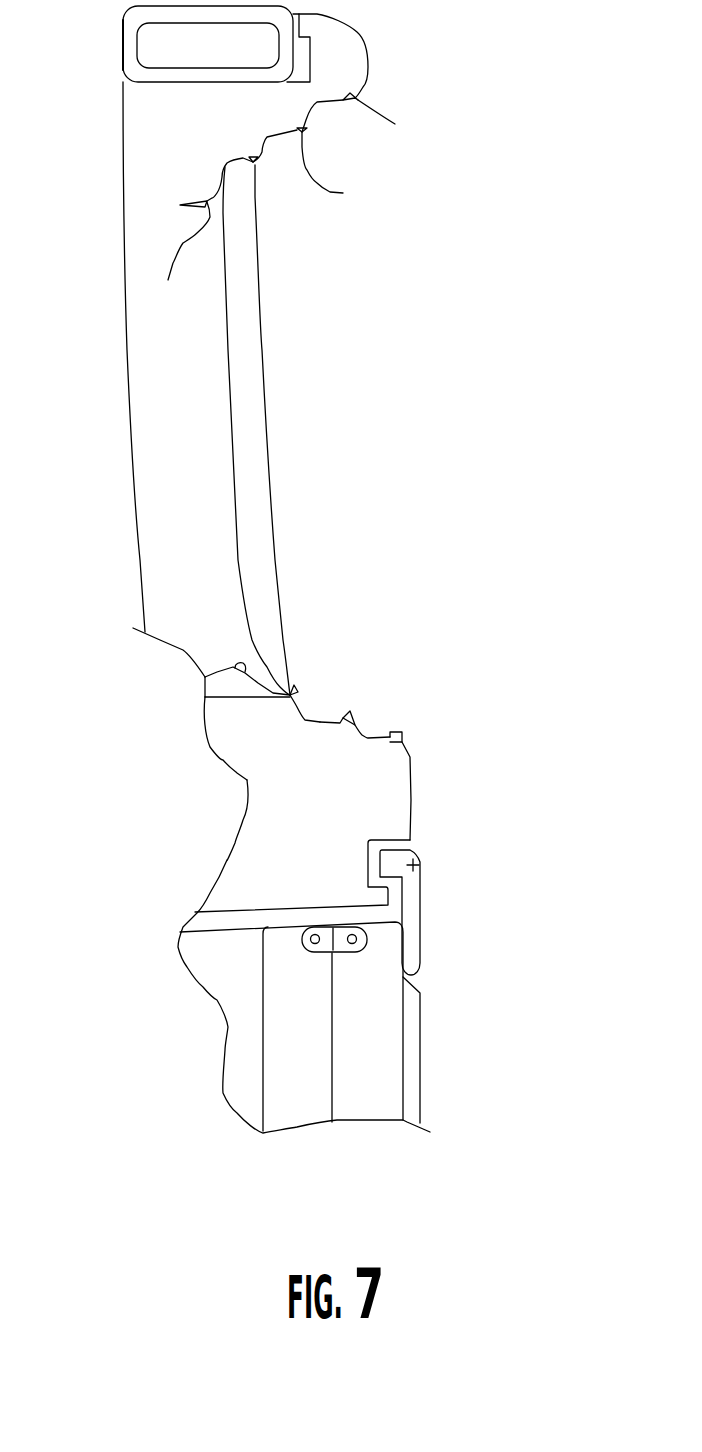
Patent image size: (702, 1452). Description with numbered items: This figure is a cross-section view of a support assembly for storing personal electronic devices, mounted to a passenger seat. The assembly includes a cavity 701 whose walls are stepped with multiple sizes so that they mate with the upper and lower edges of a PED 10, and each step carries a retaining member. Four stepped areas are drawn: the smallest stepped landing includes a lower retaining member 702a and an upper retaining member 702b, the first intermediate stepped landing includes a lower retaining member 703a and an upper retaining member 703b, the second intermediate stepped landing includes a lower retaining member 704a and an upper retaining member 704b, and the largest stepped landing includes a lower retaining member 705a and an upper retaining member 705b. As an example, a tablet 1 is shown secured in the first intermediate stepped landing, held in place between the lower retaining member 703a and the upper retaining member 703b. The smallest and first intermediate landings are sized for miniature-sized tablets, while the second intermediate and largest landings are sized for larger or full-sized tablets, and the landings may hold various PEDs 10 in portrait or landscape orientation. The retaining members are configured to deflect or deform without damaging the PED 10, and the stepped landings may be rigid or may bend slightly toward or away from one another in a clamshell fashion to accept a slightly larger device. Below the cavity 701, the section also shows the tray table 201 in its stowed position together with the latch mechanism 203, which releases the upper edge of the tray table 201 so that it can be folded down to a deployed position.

The cavity 701 is at (295, 433).
The upper retaining member 705b is at (395, 124).
The upper retaining member 704b is at (352, 159).
The upper retaining member 703b is at (258, 163).
The upper retaining member 702b is at (173, 266).
The tablet 1 is at (253, 477).
The PED 10 is at (255, 530).
The lower retaining member 703a is at (290, 695).
The lower retaining member 704a is at (350, 711).
The lower retaining member 705a is at (395, 732).
The lower retaining member 702a is at (205, 677).
The latch mechanism 203 is at (419, 863).
The tray table 201 is at (382, 1070).